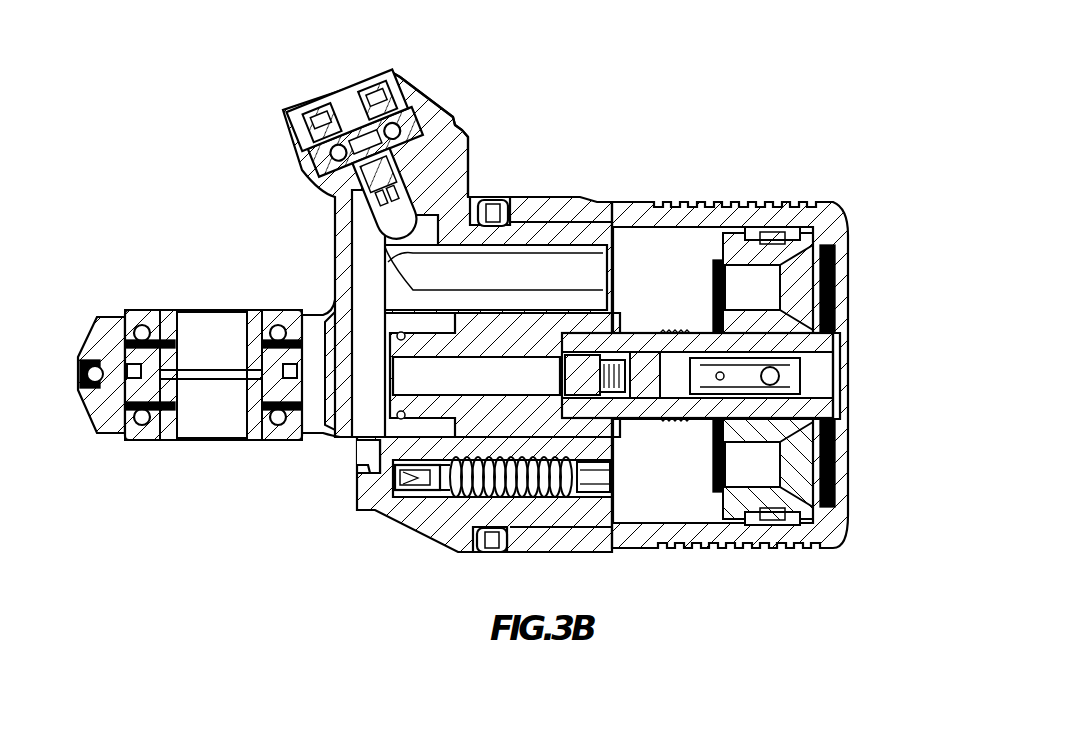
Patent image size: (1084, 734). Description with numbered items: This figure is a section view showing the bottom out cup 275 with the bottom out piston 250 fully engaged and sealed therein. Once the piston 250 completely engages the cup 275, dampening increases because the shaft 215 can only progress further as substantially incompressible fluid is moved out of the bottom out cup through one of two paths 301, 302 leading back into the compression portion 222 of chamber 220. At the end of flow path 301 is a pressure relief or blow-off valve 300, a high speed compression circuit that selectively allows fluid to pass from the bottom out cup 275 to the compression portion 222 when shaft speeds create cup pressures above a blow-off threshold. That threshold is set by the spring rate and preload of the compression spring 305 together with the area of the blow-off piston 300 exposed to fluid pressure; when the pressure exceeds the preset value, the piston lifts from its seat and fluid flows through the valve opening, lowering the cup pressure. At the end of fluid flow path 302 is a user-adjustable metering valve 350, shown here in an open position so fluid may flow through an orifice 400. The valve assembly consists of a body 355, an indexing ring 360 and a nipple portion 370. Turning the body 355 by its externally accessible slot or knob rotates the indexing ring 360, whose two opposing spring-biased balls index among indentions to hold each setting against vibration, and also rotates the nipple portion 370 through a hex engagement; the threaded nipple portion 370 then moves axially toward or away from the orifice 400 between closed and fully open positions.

The shaft 215 is at (697, 257).
The chamber 220 is at (688, 495).
The compression portion 222 is at (672, 250).
The bottom out piston 250 is at (443, 487).
The bottom out cup 275 is at (367, 455).
The blow-off valve 300 is at (482, 412).
The flow path 301 is at (340, 438).
The fluid flow path 302 is at (368, 250).
The compression spring 305 is at (540, 495).
The metering valve 350 is at (272, 147).
The body 355 is at (453, 133).
The indexing ring 360 is at (353, 95).
The nipple portion 370 is at (383, 172).
The orifice 400 is at (413, 253).